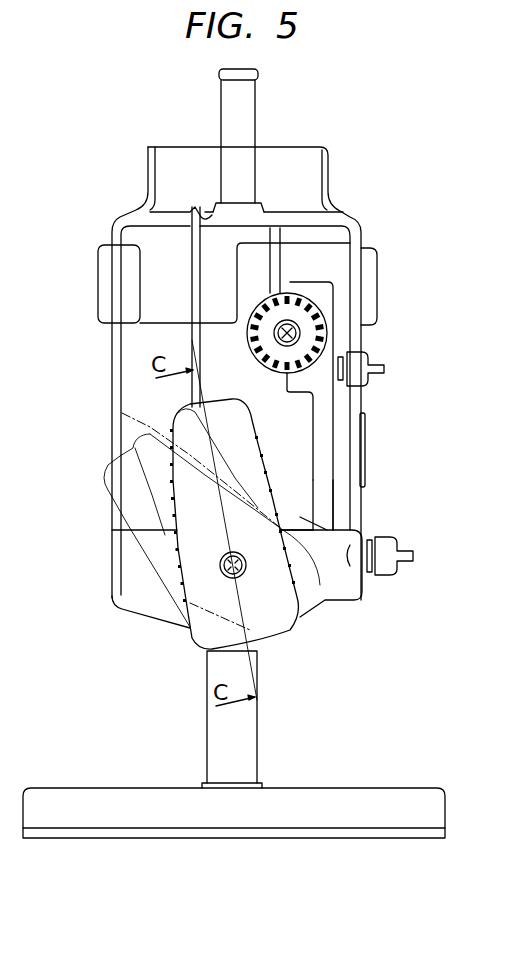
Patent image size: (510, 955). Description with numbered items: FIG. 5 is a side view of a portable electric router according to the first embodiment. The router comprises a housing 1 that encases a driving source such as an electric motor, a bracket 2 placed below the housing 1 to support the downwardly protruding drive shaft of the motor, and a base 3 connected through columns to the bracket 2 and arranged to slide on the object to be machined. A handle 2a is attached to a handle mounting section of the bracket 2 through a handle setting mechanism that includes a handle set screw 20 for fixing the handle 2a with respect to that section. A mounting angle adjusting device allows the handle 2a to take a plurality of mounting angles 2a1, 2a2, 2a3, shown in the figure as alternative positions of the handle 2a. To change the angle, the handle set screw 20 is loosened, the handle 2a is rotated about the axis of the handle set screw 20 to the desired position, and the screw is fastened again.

The housing 1 is at (362, 226).
The bracket 2 is at (110, 537).
The handle 2a is at (246, 452).
The mounting angle 2a1 is at (232, 400).
The mounting angle 2a2 is at (122, 413).
The mounting angle 2a3 is at (133, 438).
The handle set screw 20 is at (246, 580).
The base 3 is at (107, 786).